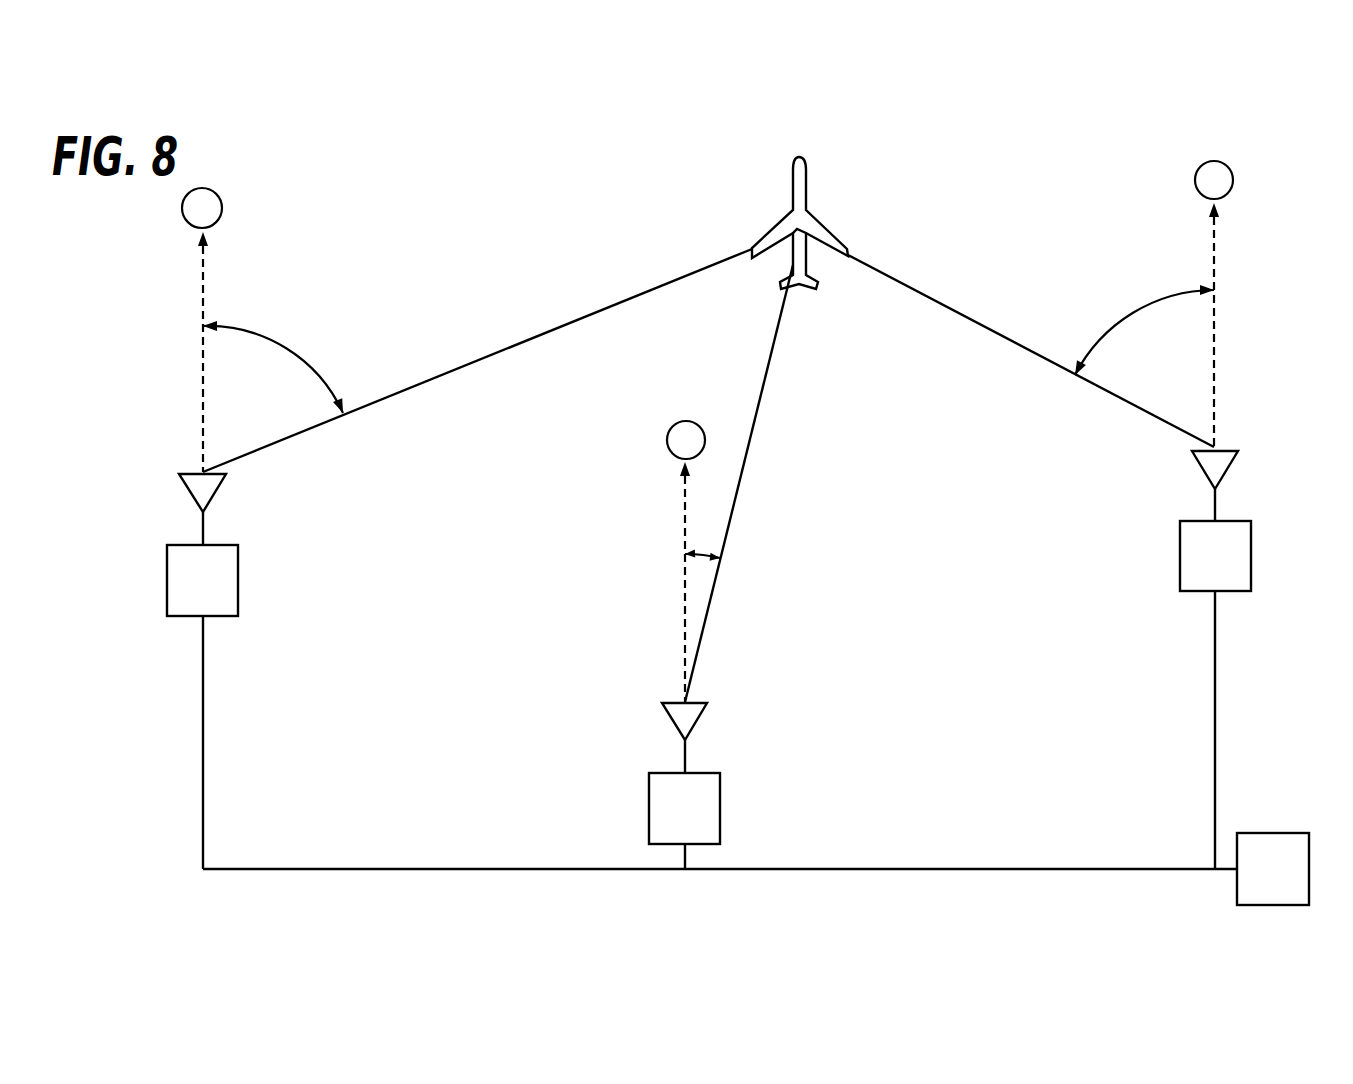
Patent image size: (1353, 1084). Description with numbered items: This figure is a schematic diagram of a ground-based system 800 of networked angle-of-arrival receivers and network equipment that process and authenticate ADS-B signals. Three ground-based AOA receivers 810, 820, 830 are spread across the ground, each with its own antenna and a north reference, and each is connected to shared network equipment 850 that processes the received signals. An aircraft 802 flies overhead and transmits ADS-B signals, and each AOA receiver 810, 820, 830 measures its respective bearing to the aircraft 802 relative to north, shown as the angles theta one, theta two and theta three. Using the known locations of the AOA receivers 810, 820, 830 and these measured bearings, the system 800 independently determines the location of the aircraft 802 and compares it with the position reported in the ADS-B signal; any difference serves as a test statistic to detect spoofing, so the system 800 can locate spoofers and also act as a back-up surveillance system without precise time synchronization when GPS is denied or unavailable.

The ground-based system 800 is at (143, 279).
The aircraft 802 is at (795, 212).
The networked AOA receiver 810 is at (185, 596).
The networked AOA receiver 820 is at (667, 822).
The networked AOA receiver 830 is at (1197, 570).
The network equipment 850 is at (1255, 883).